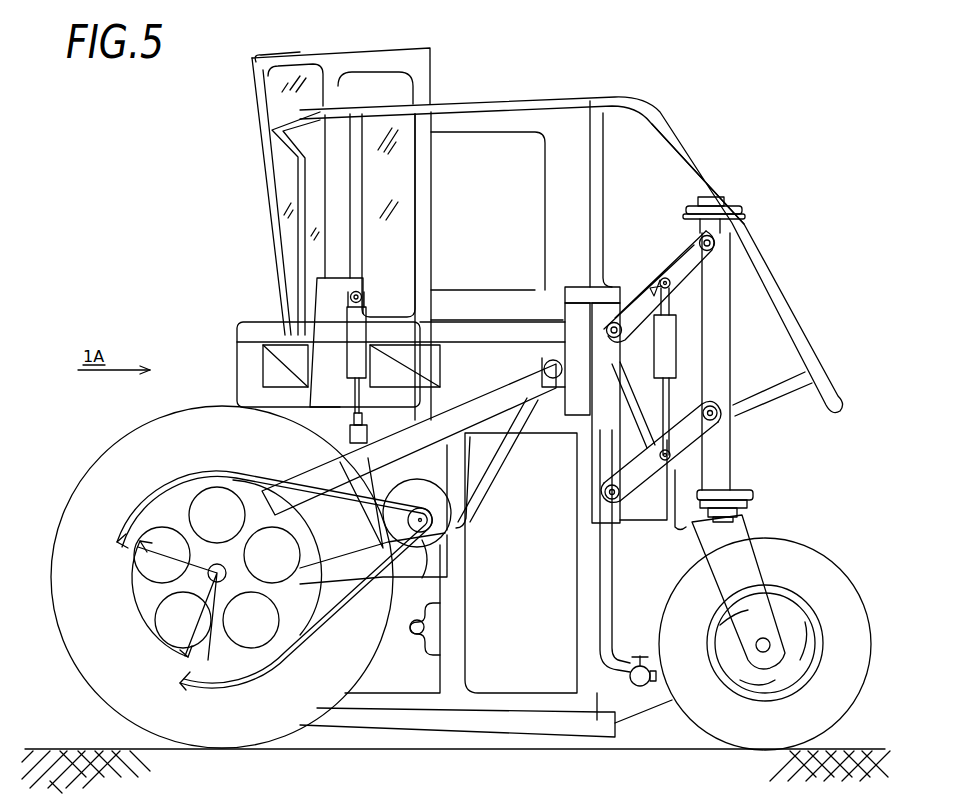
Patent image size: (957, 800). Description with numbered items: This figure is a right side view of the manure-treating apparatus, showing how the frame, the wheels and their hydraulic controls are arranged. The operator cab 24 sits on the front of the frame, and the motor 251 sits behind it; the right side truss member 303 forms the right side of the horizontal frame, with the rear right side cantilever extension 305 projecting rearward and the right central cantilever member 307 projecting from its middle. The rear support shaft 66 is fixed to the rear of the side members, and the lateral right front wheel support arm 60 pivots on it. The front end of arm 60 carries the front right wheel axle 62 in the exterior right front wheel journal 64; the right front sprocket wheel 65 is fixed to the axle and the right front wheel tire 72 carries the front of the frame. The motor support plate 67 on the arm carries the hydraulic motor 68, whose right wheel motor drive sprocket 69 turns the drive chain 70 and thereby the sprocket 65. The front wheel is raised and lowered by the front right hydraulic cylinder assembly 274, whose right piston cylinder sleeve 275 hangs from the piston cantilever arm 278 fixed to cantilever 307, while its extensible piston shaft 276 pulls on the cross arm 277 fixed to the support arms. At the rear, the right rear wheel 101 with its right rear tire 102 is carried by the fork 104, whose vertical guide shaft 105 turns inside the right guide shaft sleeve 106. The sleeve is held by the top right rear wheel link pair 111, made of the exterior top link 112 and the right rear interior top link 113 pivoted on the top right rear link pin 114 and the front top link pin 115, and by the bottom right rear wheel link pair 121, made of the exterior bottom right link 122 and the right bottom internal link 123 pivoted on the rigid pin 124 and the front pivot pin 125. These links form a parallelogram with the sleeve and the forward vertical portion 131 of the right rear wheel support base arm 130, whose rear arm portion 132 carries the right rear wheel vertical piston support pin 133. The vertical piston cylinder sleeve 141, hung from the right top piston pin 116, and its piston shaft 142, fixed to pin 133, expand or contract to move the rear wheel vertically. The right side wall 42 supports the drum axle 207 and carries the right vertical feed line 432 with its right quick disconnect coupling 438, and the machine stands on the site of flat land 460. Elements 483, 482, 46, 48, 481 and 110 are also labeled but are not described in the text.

The operator cab 24 is at (427, 64).
The roof rail 483 is at (676, 118).
The motor 251 is at (478, 213).
The panel member 482 is at (471, 320).
The right side truss member 303 is at (277, 322).
The right central cantilever member 307 is at (317, 333).
The front right hydraulic cylinder assembly 274 is at (410, 388).
The right piston cylinder sleeve 275 is at (366, 333).
The extensible piston shaft 276 is at (361, 399).
The cross arm 277 is at (345, 448).
The piston cantilever arm 278 is at (358, 291).
The rear right side cantilever extension 305 is at (567, 312).
The front top link pin 115 is at (590, 292).
The rear support shaft 66 is at (557, 388).
The front pivot pin 125 is at (603, 518).
The forward vertical portion 131 is at (600, 435).
The right rear wheel support base arm 130 is at (543, 450).
The rear arm portion 132 is at (603, 512).
The lateral right front wheel support arm 60 is at (409, 439).
The right side wall 42 is at (424, 680).
The drum axle 207 is at (424, 628).
The body panel 46 is at (605, 698).
The site of flat land 460 is at (677, 728).
The strut tube 48 is at (650, 611).
The right vertical feed line 432 is at (612, 578).
The right quick disconnect coupling 438 is at (643, 660).
The bracket 481 is at (690, 522).
The right front wheel tire 72 is at (94, 575).
The front right wheel axle 62 is at (214, 578).
The exterior right front wheel journal 64 is at (210, 590).
The right front sprocket wheel 65 is at (258, 660).
The drive chain 70 is at (363, 600).
The hydraulic motor 68 is at (447, 530).
The motor support plate 67 is at (447, 545).
The right wheel motor drive sprocket 69 is at (418, 560).
The steering head plate 110 is at (722, 203).
The top right rear link pin 114 is at (707, 240).
The right guide shaft sleeve 106 is at (720, 236).
The top right rear wheel link pair 111 is at (677, 212).
The right rear interior top link 113 is at (647, 294).
The exterior top link 112 is at (687, 280).
The right top piston pin 116 is at (672, 290).
The vertical piston cylinder sleeve 141 is at (663, 350).
The piston shaft 142 is at (667, 412).
The rigid pin 124 is at (712, 402).
The right rear wheel vertical piston support pin 133 is at (672, 457).
The exterior bottom right link 122 is at (686, 440).
The right bottom internal link 123 is at (676, 452).
The bottom right rear wheel link pair 121 is at (772, 405).
The vertical guide shaft 105 is at (742, 517).
The fork 104 is at (740, 570).
The right rear tire 102 is at (857, 650).
The right rear wheel 101 is at (803, 640).